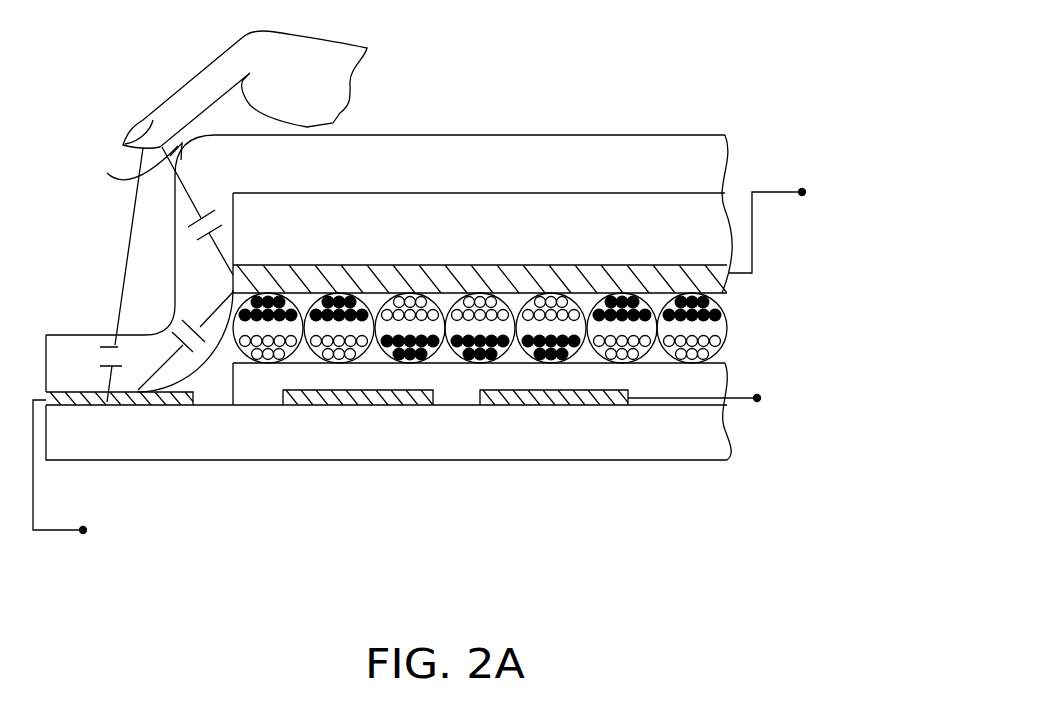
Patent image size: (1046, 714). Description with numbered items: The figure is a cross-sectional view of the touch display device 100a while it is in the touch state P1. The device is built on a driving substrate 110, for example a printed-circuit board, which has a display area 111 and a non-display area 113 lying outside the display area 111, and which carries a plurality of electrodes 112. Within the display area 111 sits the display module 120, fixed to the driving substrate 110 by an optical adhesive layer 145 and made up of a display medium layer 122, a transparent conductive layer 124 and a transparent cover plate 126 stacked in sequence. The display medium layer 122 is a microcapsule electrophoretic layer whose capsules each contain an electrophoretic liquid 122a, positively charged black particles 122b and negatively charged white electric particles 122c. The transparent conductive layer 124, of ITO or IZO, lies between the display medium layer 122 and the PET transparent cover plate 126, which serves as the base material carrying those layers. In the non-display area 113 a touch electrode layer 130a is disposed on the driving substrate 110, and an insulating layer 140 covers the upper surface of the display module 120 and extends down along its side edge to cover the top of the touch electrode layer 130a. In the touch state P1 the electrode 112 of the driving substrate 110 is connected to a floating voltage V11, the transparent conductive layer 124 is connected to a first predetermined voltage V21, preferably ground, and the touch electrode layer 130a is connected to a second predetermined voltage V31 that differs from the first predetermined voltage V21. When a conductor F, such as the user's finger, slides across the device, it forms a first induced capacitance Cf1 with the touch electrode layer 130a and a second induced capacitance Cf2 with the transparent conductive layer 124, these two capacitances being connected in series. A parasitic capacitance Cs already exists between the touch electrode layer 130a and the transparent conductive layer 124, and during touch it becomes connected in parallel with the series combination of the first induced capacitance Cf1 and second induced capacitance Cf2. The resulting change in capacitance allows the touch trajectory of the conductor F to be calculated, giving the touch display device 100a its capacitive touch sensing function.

The touch display device 100a is at (756, 513).
The driving substrate 110 is at (713, 432).
The display area 111 is at (727, 466).
The electrodes 112 is at (359, 406).
The non-display area 113 is at (235, 466).
The display module 120 is at (846, 222).
The display medium layer 122 is at (791, 283).
The electrophoretic liquid 122a is at (708, 328).
The positively charged black particles 122b is at (727, 310).
The negatively charged white electric particles 122c is at (722, 344).
The transparent conductive layer 124 is at (717, 280).
The transparent cover plate 126 is at (712, 245).
The touch electrode layer 130a is at (68, 392).
The insulating layer 140 is at (714, 170).
The optical adhesive layer 145 is at (710, 378).
The conductor F is at (315, 52).
The touch state P1 is at (102, 60).
The first induced capacitance Cf1 is at (130, 275).
The second induced capacitance Cf2 is at (197, 211).
The parasitic capacitance Cs is at (185, 339).
The floating voltage V11 is at (717, 406).
The first predetermined voltage V21 is at (788, 225).
The second predetermined voltage V31 is at (83, 475).